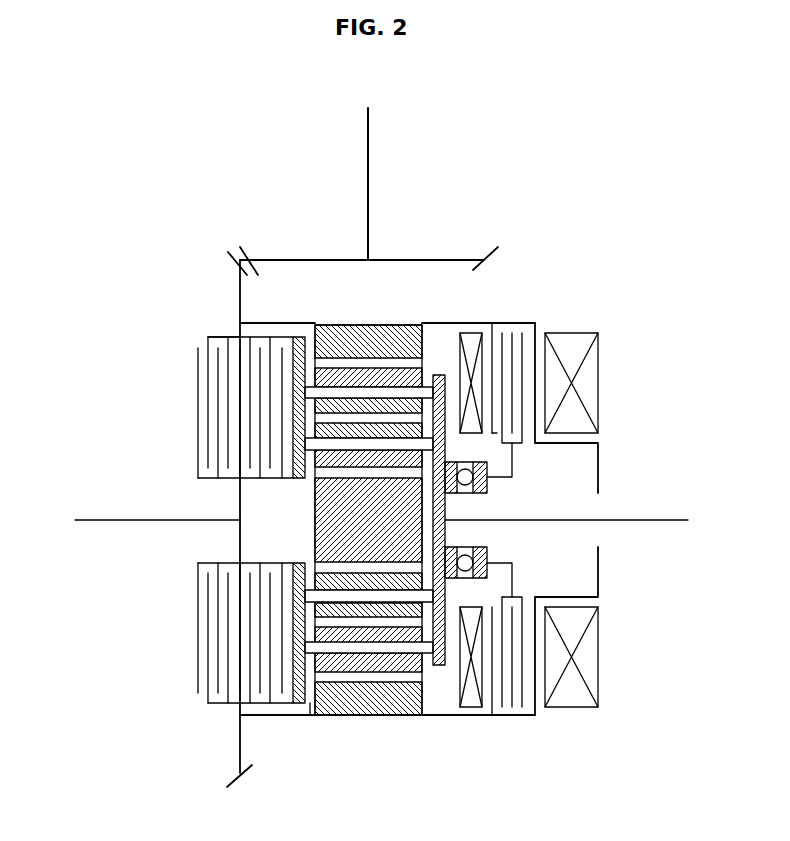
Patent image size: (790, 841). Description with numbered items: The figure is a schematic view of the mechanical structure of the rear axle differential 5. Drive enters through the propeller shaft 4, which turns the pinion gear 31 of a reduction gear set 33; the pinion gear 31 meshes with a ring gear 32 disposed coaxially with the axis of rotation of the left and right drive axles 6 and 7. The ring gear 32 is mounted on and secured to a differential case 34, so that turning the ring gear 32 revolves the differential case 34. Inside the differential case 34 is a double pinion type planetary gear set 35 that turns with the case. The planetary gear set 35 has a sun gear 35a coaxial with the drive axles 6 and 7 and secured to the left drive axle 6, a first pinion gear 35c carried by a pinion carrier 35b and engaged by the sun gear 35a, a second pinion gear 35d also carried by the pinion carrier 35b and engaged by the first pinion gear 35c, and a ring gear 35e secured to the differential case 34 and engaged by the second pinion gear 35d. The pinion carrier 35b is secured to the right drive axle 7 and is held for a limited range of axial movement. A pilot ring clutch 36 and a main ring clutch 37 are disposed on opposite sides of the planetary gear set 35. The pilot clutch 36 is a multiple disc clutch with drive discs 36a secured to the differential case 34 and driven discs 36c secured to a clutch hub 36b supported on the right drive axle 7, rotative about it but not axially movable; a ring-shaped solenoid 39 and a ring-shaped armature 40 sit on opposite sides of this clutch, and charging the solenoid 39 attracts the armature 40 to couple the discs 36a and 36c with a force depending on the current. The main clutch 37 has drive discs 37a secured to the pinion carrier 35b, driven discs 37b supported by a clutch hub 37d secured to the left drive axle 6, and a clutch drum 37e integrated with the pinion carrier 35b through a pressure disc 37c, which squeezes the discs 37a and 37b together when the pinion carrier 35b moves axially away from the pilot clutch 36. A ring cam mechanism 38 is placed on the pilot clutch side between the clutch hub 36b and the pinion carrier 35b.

The propeller shaft 4 is at (370, 181).
The rear axle differential 5 is at (601, 231).
The left drive axle 6 is at (138, 518).
The right drive axle 7 is at (653, 517).
The pinion gear 31 is at (437, 259).
The ring gear 32 is at (239, 291).
The reduction gear set 33 is at (243, 243).
The differential case 34 is at (284, 322).
The planetary gear set 35 is at (400, 520).
The sun gear 35a is at (326, 506).
The pinion carrier 35b is at (446, 530).
The first pinion gear 35c is at (328, 576).
The second pinion gear 35d is at (387, 668).
The ring gear 35e is at (350, 708).
The pilot ring clutch 36 is at (524, 319).
The drive discs 36a is at (523, 704).
The clutch hub 36b is at (517, 585).
The driven discs 36c is at (512, 704).
The main ring clutch 37 is at (215, 526).
The drive discs 37a is at (231, 696).
The driven discs 37b is at (217, 668).
The pressure disc 37c is at (297, 707).
The clutch hub 37d is at (197, 399).
The clutch drum 37e is at (214, 336).
The ring cam mechanism 38 is at (490, 489).
The ring-shaped solenoid 39 is at (578, 332).
The ring-shaped armature 40 is at (473, 332).